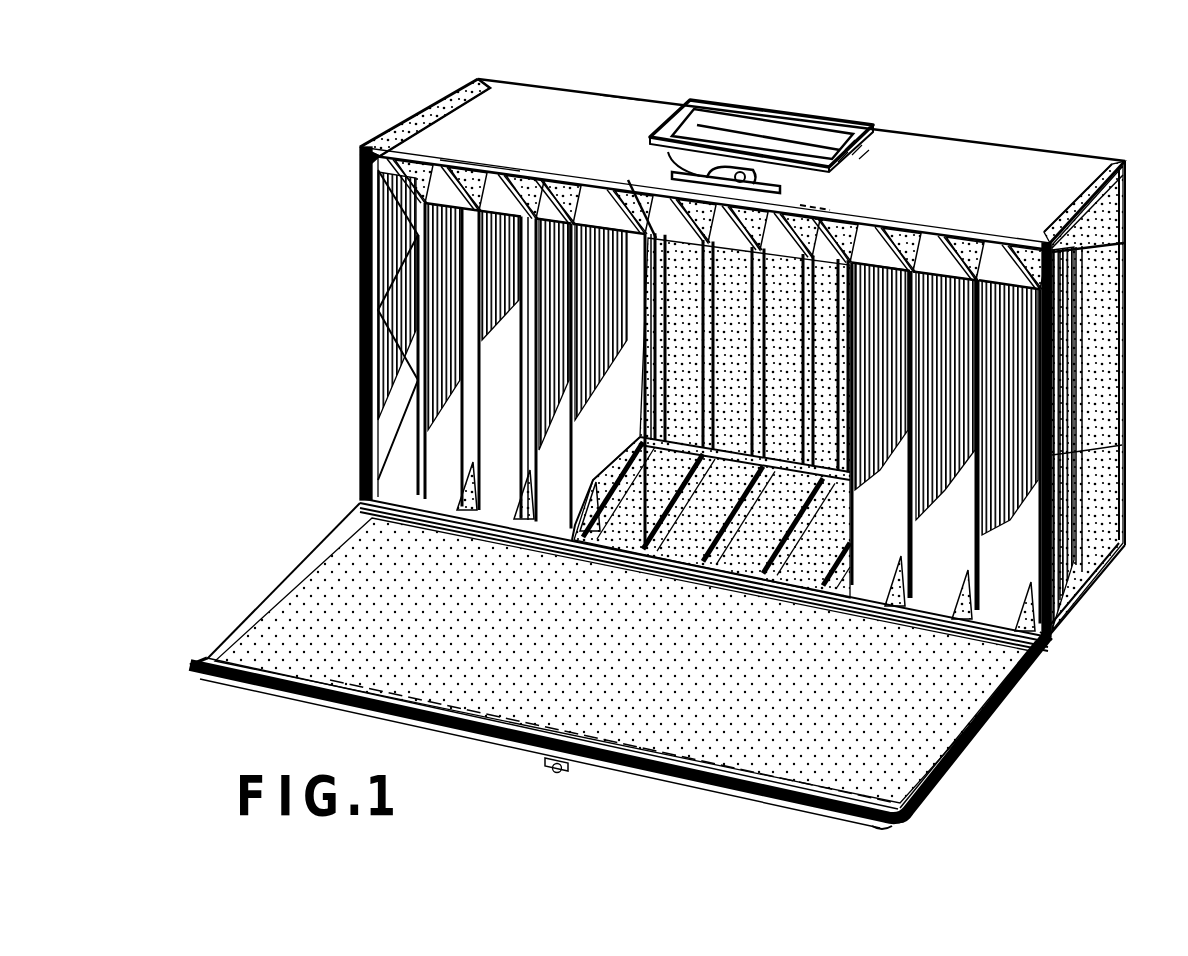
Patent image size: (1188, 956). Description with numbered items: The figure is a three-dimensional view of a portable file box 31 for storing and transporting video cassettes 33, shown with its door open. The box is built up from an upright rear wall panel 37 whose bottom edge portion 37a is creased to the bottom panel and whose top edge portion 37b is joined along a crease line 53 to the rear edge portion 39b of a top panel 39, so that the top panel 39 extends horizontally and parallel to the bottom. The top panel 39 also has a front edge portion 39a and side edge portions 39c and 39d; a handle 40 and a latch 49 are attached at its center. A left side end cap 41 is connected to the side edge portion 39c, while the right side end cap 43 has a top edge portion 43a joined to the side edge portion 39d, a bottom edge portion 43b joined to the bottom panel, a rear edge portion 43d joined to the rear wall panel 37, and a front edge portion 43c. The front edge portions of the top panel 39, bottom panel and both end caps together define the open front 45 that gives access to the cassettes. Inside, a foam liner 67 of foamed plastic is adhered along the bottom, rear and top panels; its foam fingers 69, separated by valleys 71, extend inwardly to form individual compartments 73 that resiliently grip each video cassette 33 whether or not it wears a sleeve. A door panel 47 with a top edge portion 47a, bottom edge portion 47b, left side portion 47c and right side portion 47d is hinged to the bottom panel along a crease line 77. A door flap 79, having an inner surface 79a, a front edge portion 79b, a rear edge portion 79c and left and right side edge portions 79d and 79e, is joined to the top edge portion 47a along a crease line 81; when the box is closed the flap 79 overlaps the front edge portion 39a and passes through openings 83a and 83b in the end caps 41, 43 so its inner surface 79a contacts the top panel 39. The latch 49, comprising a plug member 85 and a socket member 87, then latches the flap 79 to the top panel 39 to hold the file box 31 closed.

The portable file box 31 is at (348, 108).
The video cassettes 33 is at (545, 198).
The rear wall panel 37 is at (868, 210).
The bottom edge portion of rear wall panel 37a is at (1085, 293).
The top edge portion of rear wall panel 37b is at (815, 206).
The top panel 39 is at (965, 176).
The front edge portion of top panel 39a is at (466, 168).
The rear edge portion of top panel 39b is at (592, 106).
The side edge portion of top panel 39c is at (483, 82).
The side edge portion of top panel 39d is at (1068, 178).
The handle 40 is at (775, 122).
The left side end cap 41 is at (360, 226).
The right side end cap 43 is at (1085, 390).
The top edge portion of right side end cap 43a is at (1095, 218).
The bottom edge portion of right side end cap 43b is at (1085, 568).
The front edge portion of right side end cap 43c is at (1056, 448).
The rear edge portion of right side end cap 43d is at (1100, 348).
The open front 45 is at (652, 238).
The door panel 47 is at (345, 567).
The top edge portion of door panel 47a is at (690, 768).
The bottom edge portion of door panel 47b is at (350, 516).
The left side portion of door panel 47c is at (290, 602).
The right side portion of door panel 47d is at (968, 714).
The latch 49 is at (668, 152).
The crease line 53 is at (918, 142).
The foam liner 67 is at (712, 560).
The foam fingers 69 is at (762, 570).
The valleys 71 is at (812, 580).
The compartments 73 is at (620, 545).
The crease line 77 is at (1046, 641).
The door flap 79 is at (290, 690).
The inner surface of door flap 79a is at (632, 760).
The front edge portion of door flap 79b is at (350, 708).
The rear edge portion of door flap 79c is at (750, 790).
The left side edge portion of door flap 79d is at (205, 662).
The right side edge portion of door flap 79e is at (880, 828).
The crease line 81 is at (914, 816).
The opening 83a is at (372, 142).
The opening 83b is at (1110, 252).
The plug member 85 is at (507, 775).
The socket member 87 is at (782, 176).